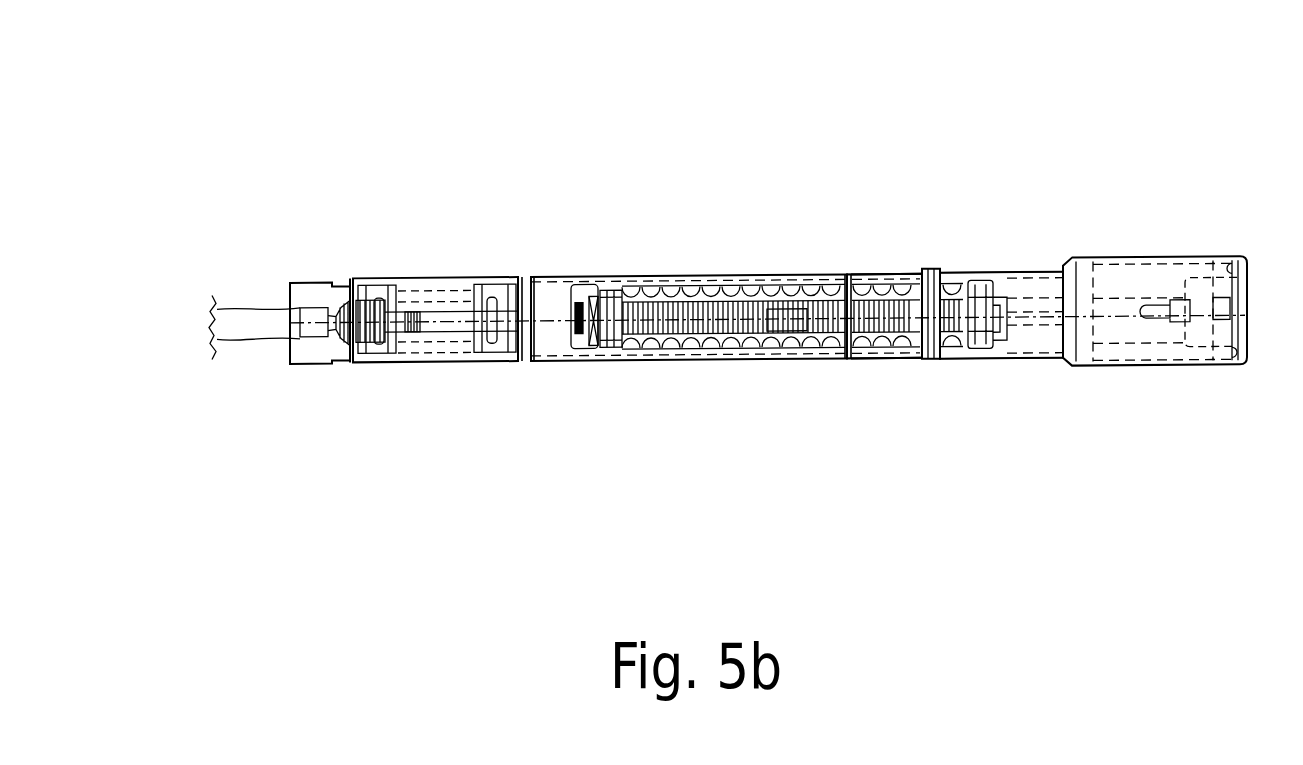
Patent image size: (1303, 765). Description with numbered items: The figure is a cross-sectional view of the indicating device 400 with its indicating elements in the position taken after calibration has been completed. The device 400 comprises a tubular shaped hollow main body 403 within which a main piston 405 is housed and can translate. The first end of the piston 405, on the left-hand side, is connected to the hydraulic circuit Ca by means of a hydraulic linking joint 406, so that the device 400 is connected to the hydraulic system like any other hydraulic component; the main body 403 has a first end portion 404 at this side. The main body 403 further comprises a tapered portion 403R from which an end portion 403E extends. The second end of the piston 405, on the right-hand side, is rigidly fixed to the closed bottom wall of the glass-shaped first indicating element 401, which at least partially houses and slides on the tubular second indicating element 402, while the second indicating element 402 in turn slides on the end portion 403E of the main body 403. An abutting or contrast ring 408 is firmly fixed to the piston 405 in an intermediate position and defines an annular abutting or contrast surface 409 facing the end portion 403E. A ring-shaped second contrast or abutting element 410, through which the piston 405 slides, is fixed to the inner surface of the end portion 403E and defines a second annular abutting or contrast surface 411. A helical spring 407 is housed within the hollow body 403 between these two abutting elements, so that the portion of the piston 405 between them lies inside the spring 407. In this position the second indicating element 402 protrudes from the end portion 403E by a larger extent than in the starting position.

The indicating device 400 is at (808, 407).
The first indicating element 401 is at (1167, 263).
The second indicating element 402 is at (1018, 268).
The tubular shaped hollow main body 403 is at (493, 279).
The tapered portion 403R is at (845, 275).
The end portion 403E is at (887, 276).
The first end portion 404 is at (315, 283).
The main piston 405 is at (447, 318).
The hydraulic linking joint 406 is at (317, 323).
The helical spring 407 is at (637, 293).
The abutting or contrast ring 408 is at (582, 342).
The abutting or contrast surface 409 is at (607, 340).
The second contrast or abutting element 410 is at (983, 338).
The second abutting or contrast surface 411 is at (967, 337).
The hydraulic circuit Ca is at (273, 322).